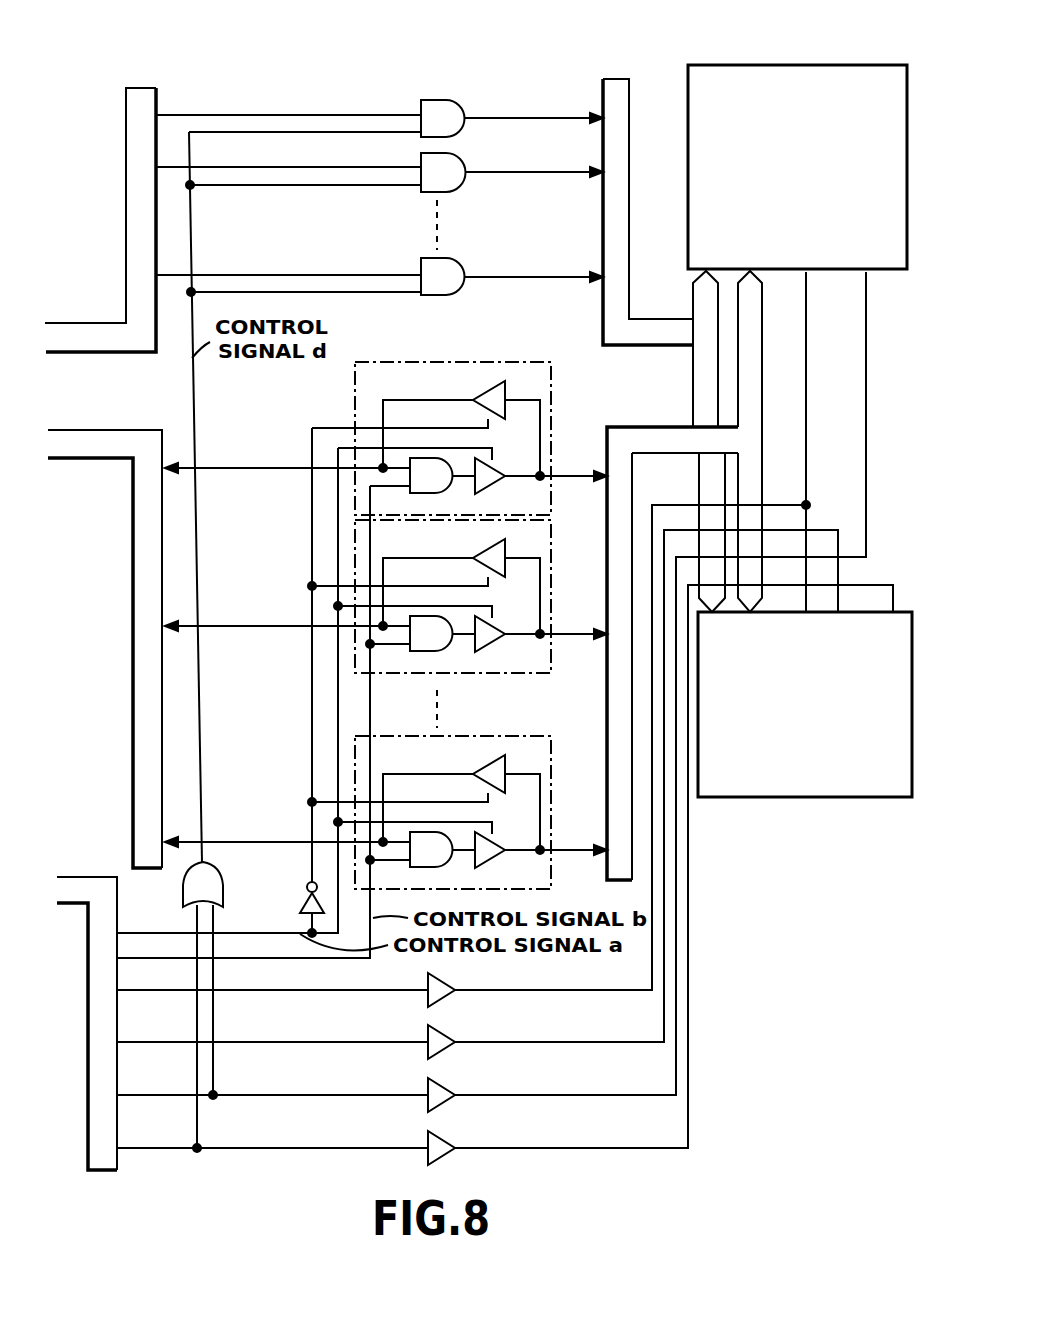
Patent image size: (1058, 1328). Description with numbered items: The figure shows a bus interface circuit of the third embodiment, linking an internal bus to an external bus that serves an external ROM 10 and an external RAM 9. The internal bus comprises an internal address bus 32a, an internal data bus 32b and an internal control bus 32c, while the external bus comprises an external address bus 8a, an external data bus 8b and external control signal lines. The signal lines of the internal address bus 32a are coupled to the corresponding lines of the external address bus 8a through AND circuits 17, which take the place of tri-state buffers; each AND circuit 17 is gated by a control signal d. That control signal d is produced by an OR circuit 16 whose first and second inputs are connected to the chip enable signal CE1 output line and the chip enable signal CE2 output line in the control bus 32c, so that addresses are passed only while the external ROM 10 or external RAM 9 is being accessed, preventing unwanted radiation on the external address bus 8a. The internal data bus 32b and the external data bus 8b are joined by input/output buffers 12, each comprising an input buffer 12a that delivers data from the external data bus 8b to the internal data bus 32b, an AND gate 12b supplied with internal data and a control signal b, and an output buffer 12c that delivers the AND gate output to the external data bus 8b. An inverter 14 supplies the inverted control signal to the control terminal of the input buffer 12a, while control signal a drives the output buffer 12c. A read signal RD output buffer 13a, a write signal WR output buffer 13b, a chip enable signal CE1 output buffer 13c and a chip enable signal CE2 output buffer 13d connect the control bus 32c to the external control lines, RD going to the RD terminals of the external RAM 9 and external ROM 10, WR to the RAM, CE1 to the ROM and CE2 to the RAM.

The external RAM 9 is at (810, 797).
The external ROM 10 is at (810, 65).
The external address bus 8a is at (657, 316).
The external data bus 8b is at (642, 425).
The input/output buffer 12 is at (553, 400).
The input buffer 12a is at (480, 395).
The AND gate 12b is at (433, 489).
The output buffer 12c is at (488, 481).
The read signal RD output buffer 13a is at (428, 986).
The write signal WR output buffer 13b is at (428, 1038).
The chip enable signal CE1 output buffer 13c is at (428, 1090).
The chip enable signal CE2 output buffer 13d is at (428, 1142).
The inverter 14 is at (306, 887).
The OR circuit 16 is at (184, 892).
The AND circuit 17 is at (446, 106).
The internal address bus 32a is at (80, 322).
The internal data bus 32b is at (82, 430).
The internal control bus 32c is at (83, 877).